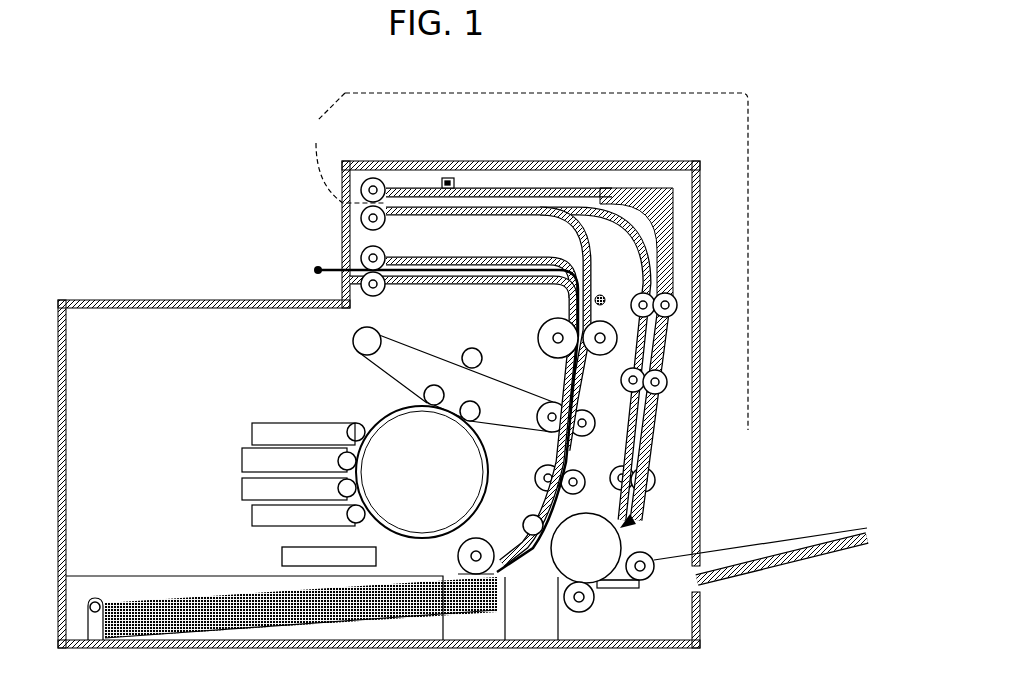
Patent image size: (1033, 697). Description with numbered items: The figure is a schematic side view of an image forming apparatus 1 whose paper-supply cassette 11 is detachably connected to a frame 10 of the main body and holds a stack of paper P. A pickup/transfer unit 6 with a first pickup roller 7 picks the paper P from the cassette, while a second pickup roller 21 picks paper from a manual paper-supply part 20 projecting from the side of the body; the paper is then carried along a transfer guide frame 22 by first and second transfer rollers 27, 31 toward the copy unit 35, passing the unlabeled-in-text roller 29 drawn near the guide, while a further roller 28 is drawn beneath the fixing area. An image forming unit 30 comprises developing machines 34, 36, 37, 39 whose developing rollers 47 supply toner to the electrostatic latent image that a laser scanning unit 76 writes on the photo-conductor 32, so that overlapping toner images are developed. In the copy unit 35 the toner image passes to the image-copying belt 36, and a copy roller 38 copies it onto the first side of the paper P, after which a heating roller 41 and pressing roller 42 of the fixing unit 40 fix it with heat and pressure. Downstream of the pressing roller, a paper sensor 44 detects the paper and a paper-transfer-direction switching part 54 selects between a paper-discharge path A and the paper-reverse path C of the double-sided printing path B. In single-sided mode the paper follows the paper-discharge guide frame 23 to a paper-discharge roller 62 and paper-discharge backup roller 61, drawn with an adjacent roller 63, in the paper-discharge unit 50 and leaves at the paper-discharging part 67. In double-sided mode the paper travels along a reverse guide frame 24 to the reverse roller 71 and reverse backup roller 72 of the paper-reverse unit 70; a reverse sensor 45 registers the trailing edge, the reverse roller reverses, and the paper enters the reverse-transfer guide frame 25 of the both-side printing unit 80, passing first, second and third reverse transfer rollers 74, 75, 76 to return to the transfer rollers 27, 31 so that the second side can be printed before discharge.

The image forming apparatus 1 is at (117, 166).
The pickup/transfer unit 6 is at (453, 578).
The first pickup roller 7 is at (458, 556).
The frame 10 is at (58, 452).
The paper-supply cassette 11 is at (66, 572).
The manual paper-supply part 20 is at (770, 586).
The second pickup roller 21 is at (660, 566).
The transfer guide frame 22 is at (540, 497).
The paper-discharge guide frame 23 is at (478, 286).
The reverse guide frame 24 is at (474, 188).
The reverse-transfer guide frame 25 is at (546, 187).
The first transfer roller 27 is at (655, 511).
The pressure roller 28 is at (578, 612).
The conveying roller 29 is at (522, 524).
The image forming unit 30 is at (339, 411).
The second transfer roller 31 is at (582, 468).
The photo-conductor 32 is at (386, 410).
The developing machine 34 is at (252, 515).
The copy unit 35 is at (342, 340).
The developing machine / image-copying belt 36 is at (242, 489).
The developing machine 37 is at (242, 459).
The copy roller 38 is at (543, 425).
The developing machine 39 is at (252, 434).
The fixing unit 40 is at (628, 338).
The heating roller 41 is at (538, 336).
The pressing roller 42 is at (582, 322).
The paper sensor 44 is at (601, 295).
The reverse sensor 45 is at (448, 177).
The developing roller 47 is at (351, 424).
The paper-discharge unit 50 is at (340, 255).
The paper-transfer-direction switching part 54 is at (564, 248).
The paper-discharge backup roller 61 is at (360, 251).
The paper-discharge roller 62 is at (366, 317).
The reverse roller 63 is at (360, 287).
The paper-discharging part 67 is at (84, 300).
The paper-reverse unit 70 is at (384, 163).
The reverse roller 71 is at (387, 207).
The reverse backup roller 72 is at (369, 178).
The first reverse transfer roller 74 is at (677, 300).
The second reverse transfer roller 75 is at (667, 378).
The third reverse transfer roller / laser scanning unit 76 is at (282, 554).
The both-side printing unit 80 is at (685, 236).
The paper-discharge path A is at (314, 270).
The double-sided printing path B is at (550, 254).
The paper-reverse path C is at (752, 437).
The paper P is at (190, 600).